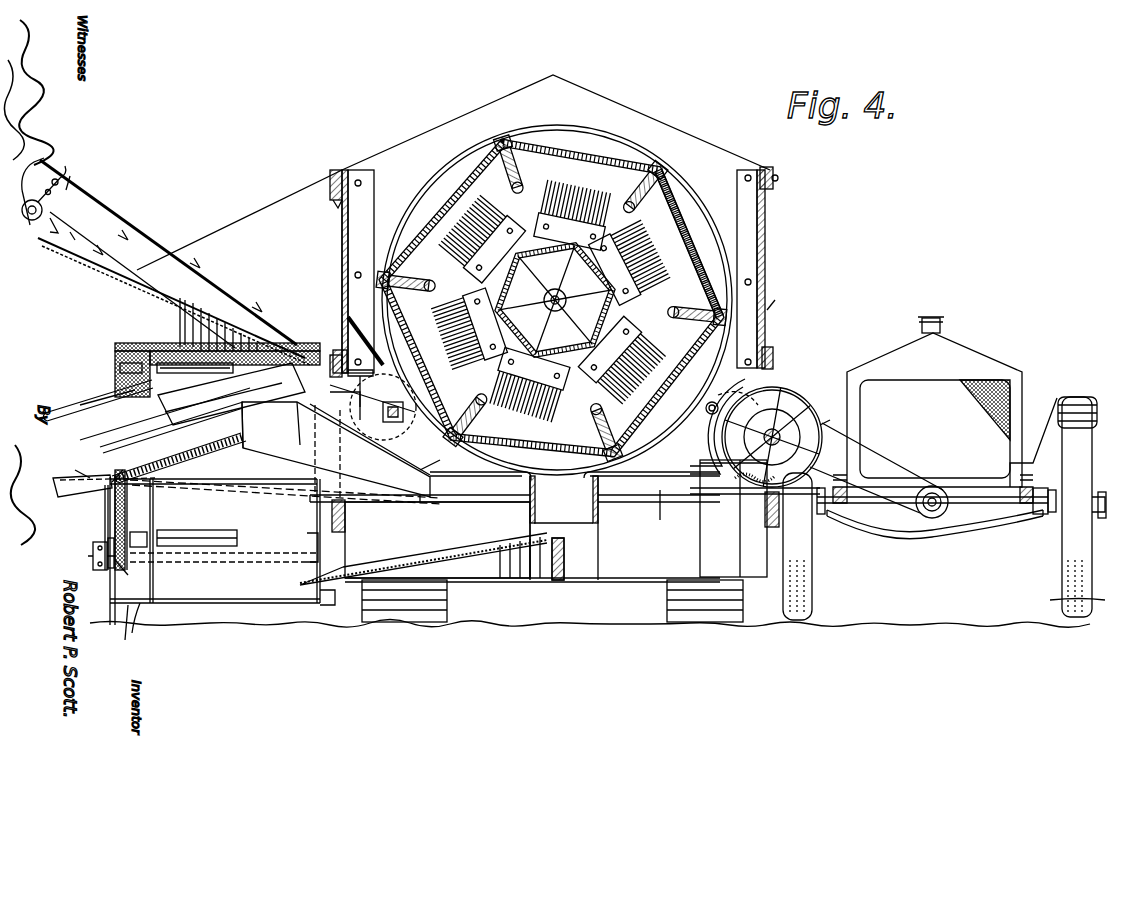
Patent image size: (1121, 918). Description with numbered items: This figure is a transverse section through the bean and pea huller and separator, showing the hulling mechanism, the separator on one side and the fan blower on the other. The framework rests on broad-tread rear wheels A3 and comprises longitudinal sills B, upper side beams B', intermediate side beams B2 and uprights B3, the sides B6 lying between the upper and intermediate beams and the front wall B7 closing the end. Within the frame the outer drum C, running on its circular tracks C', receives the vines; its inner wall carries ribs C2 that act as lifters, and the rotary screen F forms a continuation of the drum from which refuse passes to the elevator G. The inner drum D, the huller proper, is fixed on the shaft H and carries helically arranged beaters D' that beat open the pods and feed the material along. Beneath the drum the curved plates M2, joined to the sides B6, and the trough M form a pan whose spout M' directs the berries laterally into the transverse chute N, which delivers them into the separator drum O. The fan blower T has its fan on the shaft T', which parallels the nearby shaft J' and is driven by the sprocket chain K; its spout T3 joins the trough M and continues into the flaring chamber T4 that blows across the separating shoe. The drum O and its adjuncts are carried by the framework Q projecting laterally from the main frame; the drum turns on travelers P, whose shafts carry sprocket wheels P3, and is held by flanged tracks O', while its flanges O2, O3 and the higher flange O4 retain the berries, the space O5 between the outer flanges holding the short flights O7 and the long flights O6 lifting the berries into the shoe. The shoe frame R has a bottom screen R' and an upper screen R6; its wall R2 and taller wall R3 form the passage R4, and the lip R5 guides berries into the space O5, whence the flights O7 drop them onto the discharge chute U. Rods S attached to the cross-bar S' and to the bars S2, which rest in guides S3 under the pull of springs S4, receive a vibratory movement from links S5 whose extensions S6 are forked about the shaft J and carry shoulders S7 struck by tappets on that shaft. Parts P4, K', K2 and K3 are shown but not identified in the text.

The elevator G is at (138, 222).
The circular tracks C' is at (557, 289).
The outer drum C is at (551, 274).
The ribs C2 is at (650, 198).
The rotary screen F is at (682, 190).
The shaft H is at (545, 296).
The inner drum D is at (555, 300).
The beaters D' is at (550, 300).
The sides B6 is at (341, 248).
The front wall B7 is at (335, 200).
The upper side beams B' is at (782, 174).
The intermediate side beams B2 is at (341, 290).
The uprights B3 is at (767, 300).
The flights O6 is at (165, 355).
The flights O7 is at (123, 342).
The chute U is at (70, 408).
The framework Q is at (107, 405).
The frame R is at (180, 454).
The second screen R6 is at (165, 420).
The screen R' is at (179, 458).
The space R4 is at (116, 475).
The cross-bar S' is at (81, 470).
The rods S is at (285, 490).
The links S5 is at (365, 490).
The chamber T4 is at (336, 449).
The drum O is at (215, 565).
The circular tracks O' is at (331, 565).
The flange O2 is at (322, 592).
The inner flange O3 is at (110, 600).
The flange O4 is at (160, 605).
The space O5 is at (132, 631).
The lip R5 is at (115, 582).
The vertical wall R2 is at (133, 520).
The second wall R3 is at (108, 493).
The sprocket wheels P3 is at (93, 556).
The plate P4 is at (105, 545).
The travelers P is at (307, 544).
The rearwardly extending member S6 is at (368, 374).
The vertical shoulder S7 is at (400, 402).
The shaft J is at (373, 412).
The shaft J' is at (717, 418).
The plates M2 is at (660, 455).
The spout M' is at (576, 528).
The trough M is at (532, 530).
The bars S2 is at (495, 502).
The spout T3 is at (655, 510).
The longitudinal sills B is at (556, 519).
The chute N is at (468, 560).
The wheels A3 is at (447, 602).
The fan blower T is at (758, 431).
The fan shaft T' is at (772, 437).
The springs S4 is at (762, 494).
The guides S3 is at (800, 528).
The engine K' is at (934, 402).
The sprocket chain K is at (876, 458).
The pulley K2 is at (930, 515).
The spring axle K3 is at (945, 520).